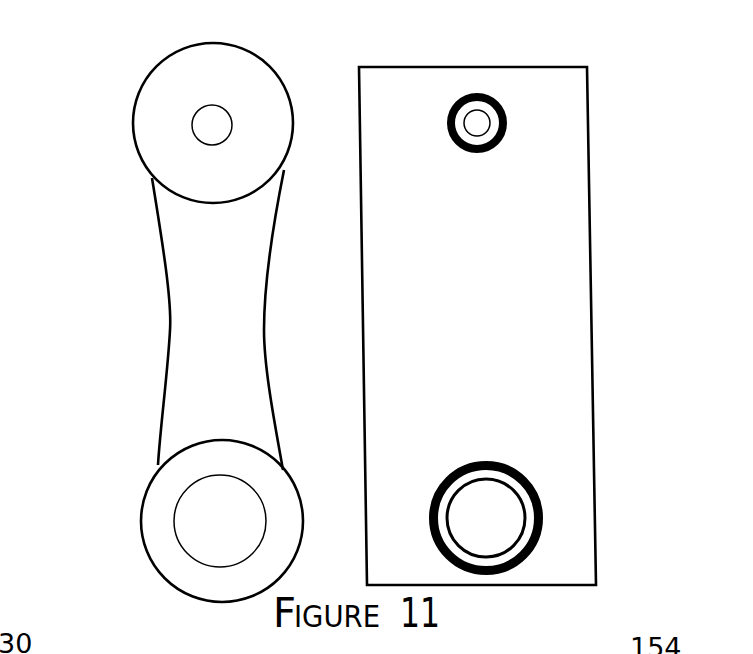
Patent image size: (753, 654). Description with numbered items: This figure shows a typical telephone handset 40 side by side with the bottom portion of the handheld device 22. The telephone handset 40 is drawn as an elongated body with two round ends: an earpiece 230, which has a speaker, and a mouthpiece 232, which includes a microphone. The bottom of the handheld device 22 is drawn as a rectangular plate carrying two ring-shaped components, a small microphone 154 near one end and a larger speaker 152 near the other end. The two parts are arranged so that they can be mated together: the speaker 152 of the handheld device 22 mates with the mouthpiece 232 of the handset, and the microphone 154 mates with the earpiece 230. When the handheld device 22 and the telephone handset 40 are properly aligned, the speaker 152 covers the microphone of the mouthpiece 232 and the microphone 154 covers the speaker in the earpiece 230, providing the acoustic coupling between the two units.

The telephone handset 40 is at (168, 391).
The earpiece 230 is at (210, 125).
The mouthpiece 232 is at (210, 537).
The handheld device 22 is at (592, 338).
The microphone 154 is at (477, 120).
The speaker 152 is at (490, 528).